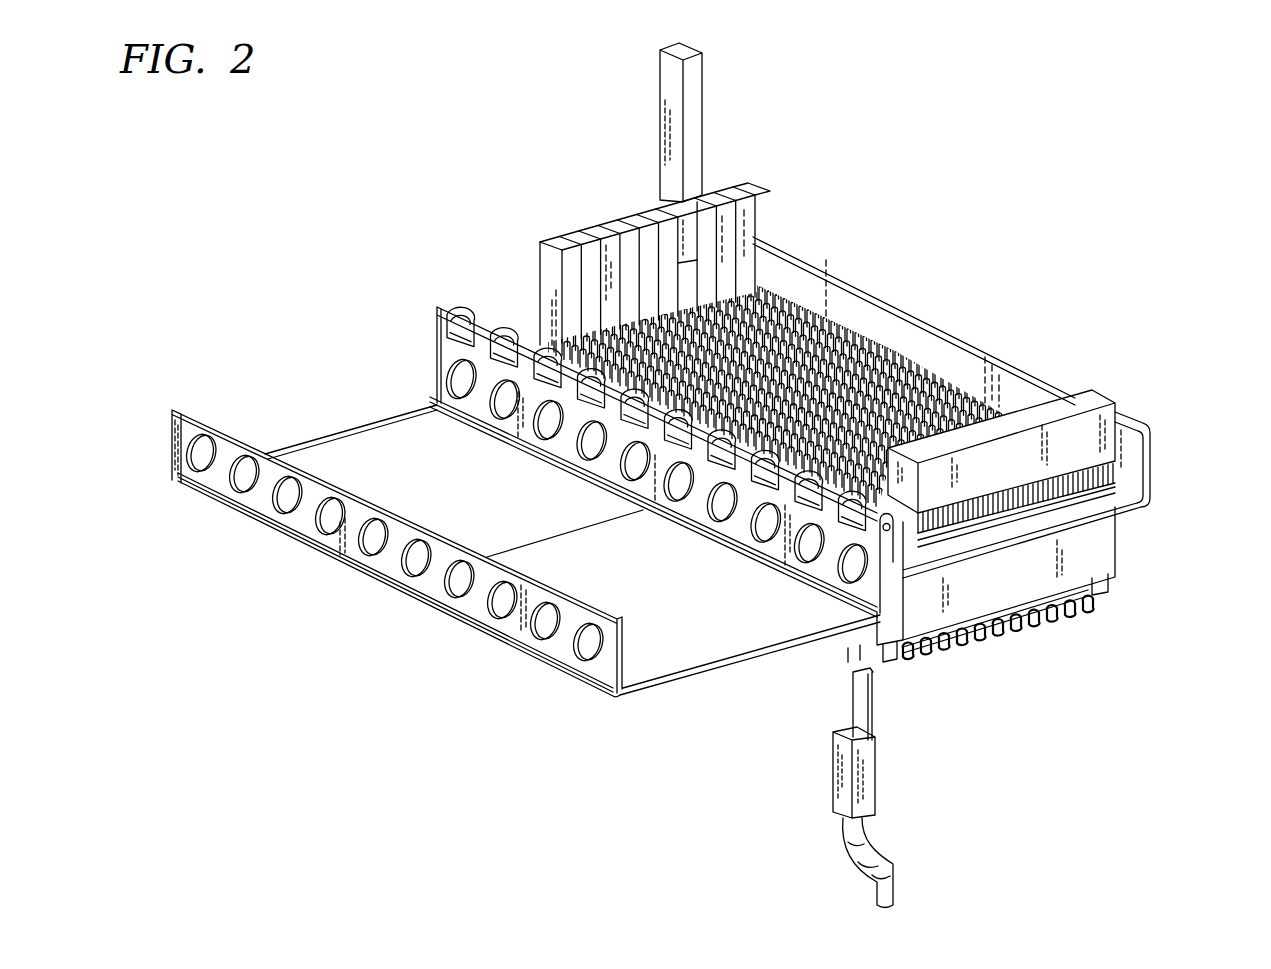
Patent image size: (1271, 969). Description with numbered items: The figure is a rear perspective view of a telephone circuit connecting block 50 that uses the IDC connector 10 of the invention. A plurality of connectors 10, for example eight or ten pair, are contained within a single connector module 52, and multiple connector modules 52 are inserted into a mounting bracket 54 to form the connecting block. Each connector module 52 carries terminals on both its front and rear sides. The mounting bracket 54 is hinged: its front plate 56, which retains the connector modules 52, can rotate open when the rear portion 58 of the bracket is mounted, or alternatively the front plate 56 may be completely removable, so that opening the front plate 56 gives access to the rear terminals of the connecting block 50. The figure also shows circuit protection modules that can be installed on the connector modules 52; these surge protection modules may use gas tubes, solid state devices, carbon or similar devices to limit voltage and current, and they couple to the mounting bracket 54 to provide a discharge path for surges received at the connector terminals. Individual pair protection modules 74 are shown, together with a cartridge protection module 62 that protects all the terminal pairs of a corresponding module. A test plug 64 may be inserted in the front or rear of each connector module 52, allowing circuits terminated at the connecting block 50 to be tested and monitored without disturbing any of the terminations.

The telephone circuit connecting block 50 is at (1008, 270).
The IDC connector 10 is at (896, 346).
The connector module 52 is at (1098, 557).
The mounting bracket 54 is at (437, 342).
The front plate 56 is at (1160, 450).
The rear portion 58 is at (640, 700).
The cartridge protection module 62 is at (1067, 402).
The test plug 64 is at (873, 805).
The individual pair protection module 74 is at (667, 85).